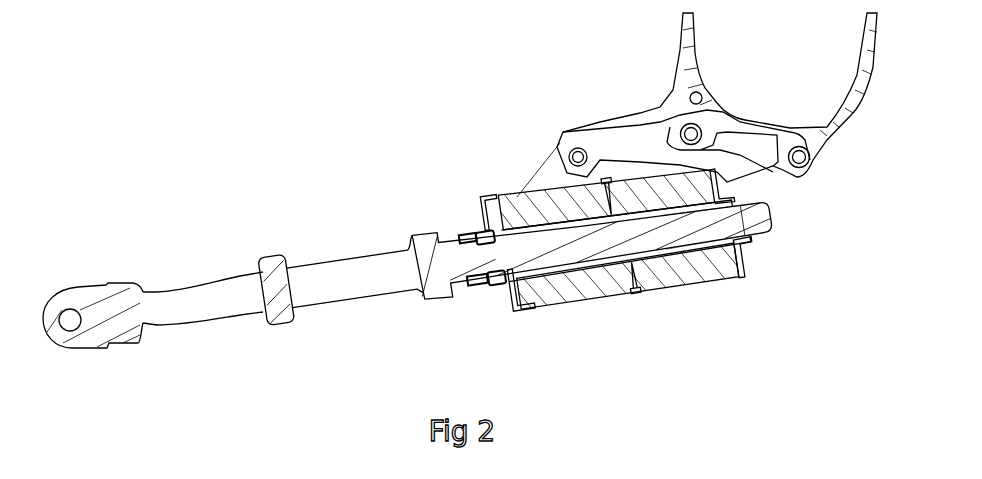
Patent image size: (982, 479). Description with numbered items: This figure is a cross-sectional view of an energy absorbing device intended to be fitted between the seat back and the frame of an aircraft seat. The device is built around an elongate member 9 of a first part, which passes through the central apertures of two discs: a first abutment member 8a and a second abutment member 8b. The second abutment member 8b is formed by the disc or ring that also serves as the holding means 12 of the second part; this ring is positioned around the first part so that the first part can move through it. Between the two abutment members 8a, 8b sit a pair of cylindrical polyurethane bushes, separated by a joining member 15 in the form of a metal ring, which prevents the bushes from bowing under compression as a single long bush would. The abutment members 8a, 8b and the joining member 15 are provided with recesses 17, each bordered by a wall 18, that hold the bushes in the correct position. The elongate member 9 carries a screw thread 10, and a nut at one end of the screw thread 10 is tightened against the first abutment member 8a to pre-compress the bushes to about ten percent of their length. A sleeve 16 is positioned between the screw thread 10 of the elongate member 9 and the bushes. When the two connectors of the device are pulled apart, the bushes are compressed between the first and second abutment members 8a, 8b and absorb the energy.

The first abutment member 8a is at (740, 251).
The second abutment member 8b is at (492, 214).
The elongate member 9 is at (683, 235).
The screw thread 10 is at (750, 221).
The holding means 12 is at (497, 205).
The joining member 15 is at (630, 297).
The sleeve 16 is at (518, 198).
The recesses 17 is at (623, 194).
The wall 18 is at (610, 191).